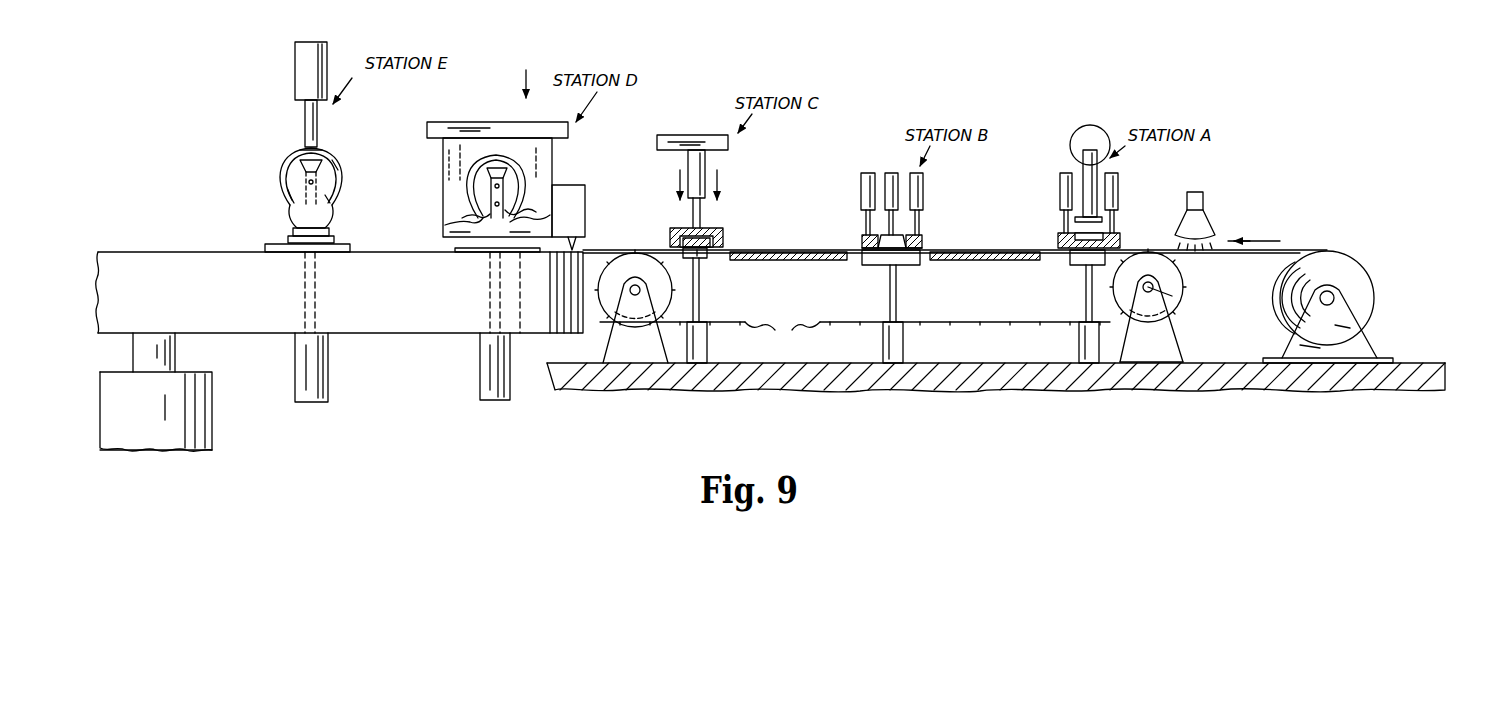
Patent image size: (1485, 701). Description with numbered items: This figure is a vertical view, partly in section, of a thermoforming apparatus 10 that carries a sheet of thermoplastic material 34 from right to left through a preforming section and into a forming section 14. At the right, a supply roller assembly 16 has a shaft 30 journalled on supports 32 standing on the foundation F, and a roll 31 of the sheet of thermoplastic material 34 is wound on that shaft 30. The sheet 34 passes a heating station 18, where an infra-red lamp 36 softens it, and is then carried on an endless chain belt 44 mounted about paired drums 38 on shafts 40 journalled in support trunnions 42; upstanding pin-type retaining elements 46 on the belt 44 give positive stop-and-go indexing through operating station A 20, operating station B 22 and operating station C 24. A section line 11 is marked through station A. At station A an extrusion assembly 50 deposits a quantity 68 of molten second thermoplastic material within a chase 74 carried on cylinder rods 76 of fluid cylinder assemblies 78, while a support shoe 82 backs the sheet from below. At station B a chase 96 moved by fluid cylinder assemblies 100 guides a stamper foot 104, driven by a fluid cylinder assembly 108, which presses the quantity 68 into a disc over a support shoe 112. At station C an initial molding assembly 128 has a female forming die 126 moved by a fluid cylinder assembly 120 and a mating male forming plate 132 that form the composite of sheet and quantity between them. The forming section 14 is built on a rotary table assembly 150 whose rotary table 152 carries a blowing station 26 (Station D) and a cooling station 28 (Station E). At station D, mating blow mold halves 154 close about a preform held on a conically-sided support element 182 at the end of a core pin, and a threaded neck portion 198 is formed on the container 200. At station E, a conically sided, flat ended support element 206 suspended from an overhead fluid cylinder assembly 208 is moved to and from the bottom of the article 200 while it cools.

The thermoforming apparatus 10 is at (978, 174).
The section line 11 is at (1030, 66).
The forming section 14 is at (428, 17).
The supply roller assembly 16 is at (1338, 242).
The heating station 18 is at (1208, 204).
The operating station A 20 is at (1120, 170).
The operating station B 22 is at (925, 180).
The operating station C 24 is at (722, 190).
The blowing station 26 is at (562, 166).
The cooling station 28 is at (340, 166).
The shaft 30 is at (1340, 298).
The roll 31 is at (1290, 280).
The supports 32 is at (1355, 345).
The sheet of thermoplastic material 34 is at (1300, 250).
The infra-red lamp 36 is at (1205, 236).
The drums 38 is at (612, 315).
The shafts 40 is at (1172, 304).
The support trunnions 42 is at (646, 349).
The endless chain belt 44 is at (787, 322).
The pin-type retaining elements 46 is at (815, 322).
The extrusion assembly 50 is at (1072, 142).
The quantity of second thermoplastic material 68 is at (1062, 236).
The chase 74 is at (1122, 242).
The cylinder rods 76 is at (1115, 218).
The fluid cylinder assemblies 78 is at (1062, 185).
The support shoe 82 is at (1072, 262).
The chase 96 is at (925, 245).
The fluid cylinder assemblies 100 is at (864, 185).
The stamper foot 104 is at (870, 232).
The fluid cylinder assembly 108 is at (888, 175).
The support shoe 112 is at (905, 266).
The fluid cylinder assembly 120 is at (708, 168).
The female forming die 126 is at (673, 230).
The initial molding assembly 128 is at (688, 165).
The male forming plate 132 is at (706, 258).
The rotary table assembly 150 is at (222, 441).
The rotary table 152 is at (383, 325).
The blow mold halves 154 is at (448, 164).
The conically-sided support element 182 is at (500, 160).
The threaded neck portion 198 is at (330, 205).
The formed container 200 is at (287, 196).
The conically sided, flat ended support element 206 is at (304, 147).
The overhead fluid cylinder assembly 208 is at (303, 78).
The foundation F is at (905, 388).